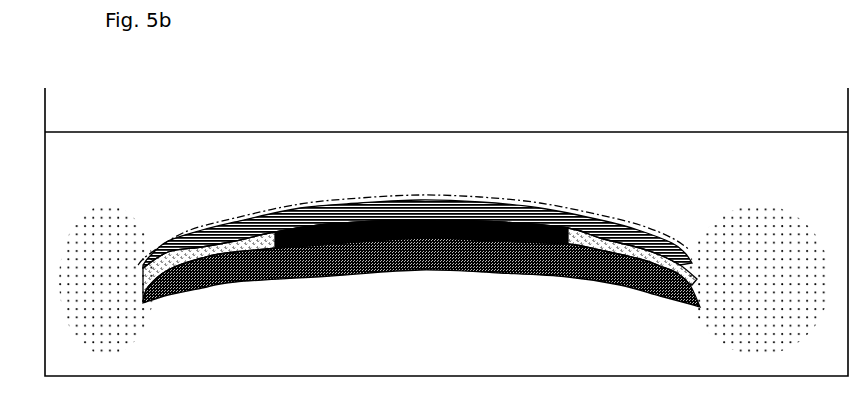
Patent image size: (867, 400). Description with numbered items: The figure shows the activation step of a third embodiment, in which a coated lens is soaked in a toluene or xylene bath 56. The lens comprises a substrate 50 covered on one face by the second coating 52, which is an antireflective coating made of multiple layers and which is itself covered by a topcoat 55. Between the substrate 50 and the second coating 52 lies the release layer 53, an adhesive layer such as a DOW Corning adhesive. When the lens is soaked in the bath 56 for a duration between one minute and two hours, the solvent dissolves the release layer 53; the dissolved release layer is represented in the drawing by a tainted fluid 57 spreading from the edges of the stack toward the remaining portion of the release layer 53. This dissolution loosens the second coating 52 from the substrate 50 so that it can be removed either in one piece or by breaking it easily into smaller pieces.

The substrate 50 is at (691, 290).
The second coating 52 is at (503, 198).
The release layer 53 is at (587, 218).
The topcoat 55 is at (367, 195).
The toluene or xylene bath 56 is at (165, 132).
The tainted fluid 57 is at (625, 254).